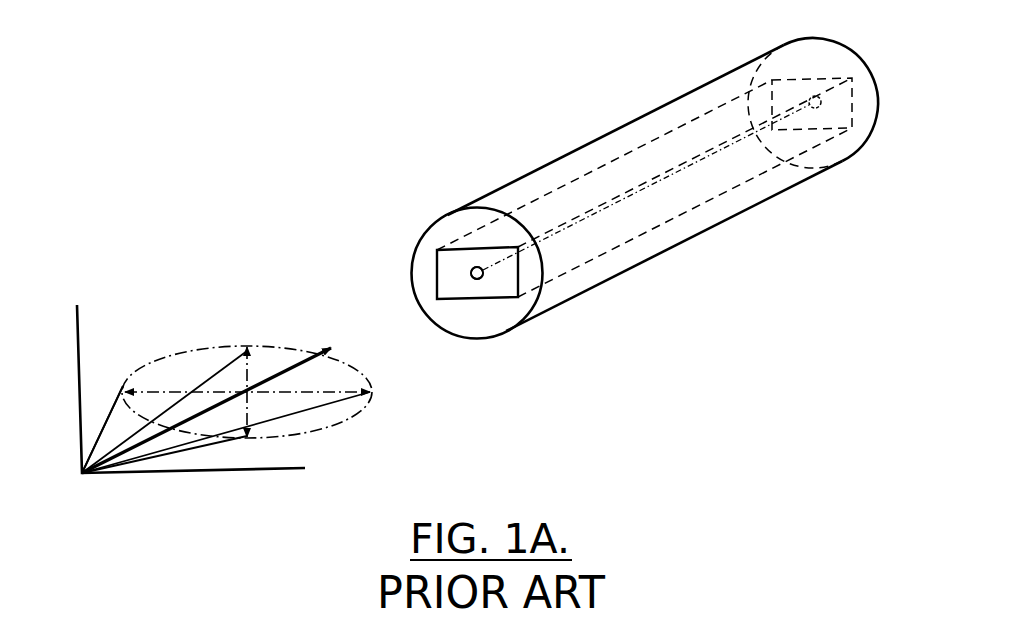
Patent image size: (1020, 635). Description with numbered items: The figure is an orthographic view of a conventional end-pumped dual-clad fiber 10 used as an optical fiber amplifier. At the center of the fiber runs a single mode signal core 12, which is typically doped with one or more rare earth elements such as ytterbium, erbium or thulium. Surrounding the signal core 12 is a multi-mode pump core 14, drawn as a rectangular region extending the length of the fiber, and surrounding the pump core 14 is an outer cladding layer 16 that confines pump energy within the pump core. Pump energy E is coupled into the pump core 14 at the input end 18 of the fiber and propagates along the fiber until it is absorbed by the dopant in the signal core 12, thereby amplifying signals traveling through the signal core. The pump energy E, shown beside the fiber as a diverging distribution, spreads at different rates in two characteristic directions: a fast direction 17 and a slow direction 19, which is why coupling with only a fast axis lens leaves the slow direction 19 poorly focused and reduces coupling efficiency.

The dual-clad fiber 10 is at (663, 178).
The single mode signal core 12 is at (646, 234).
The multi-mode pump core 14 is at (438, 224).
The outer cladding layer 16 is at (644, 210).
The input end 18 is at (444, 271).
The pump energy E is at (224, 378).
The fast direction 17 is at (269, 380).
The slow direction 19 is at (170, 392).